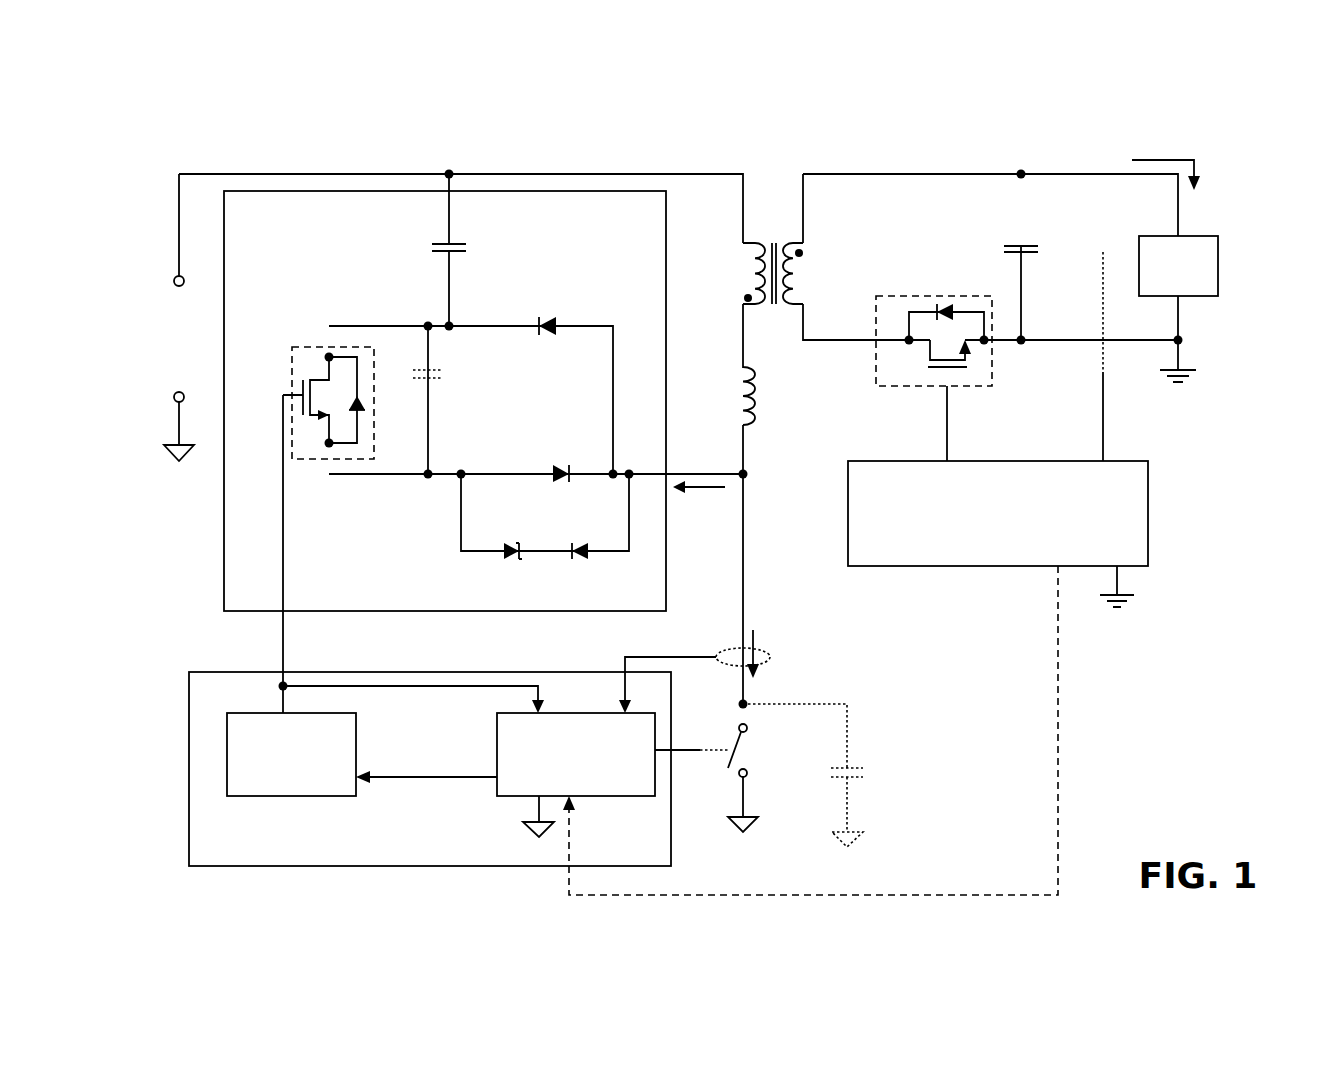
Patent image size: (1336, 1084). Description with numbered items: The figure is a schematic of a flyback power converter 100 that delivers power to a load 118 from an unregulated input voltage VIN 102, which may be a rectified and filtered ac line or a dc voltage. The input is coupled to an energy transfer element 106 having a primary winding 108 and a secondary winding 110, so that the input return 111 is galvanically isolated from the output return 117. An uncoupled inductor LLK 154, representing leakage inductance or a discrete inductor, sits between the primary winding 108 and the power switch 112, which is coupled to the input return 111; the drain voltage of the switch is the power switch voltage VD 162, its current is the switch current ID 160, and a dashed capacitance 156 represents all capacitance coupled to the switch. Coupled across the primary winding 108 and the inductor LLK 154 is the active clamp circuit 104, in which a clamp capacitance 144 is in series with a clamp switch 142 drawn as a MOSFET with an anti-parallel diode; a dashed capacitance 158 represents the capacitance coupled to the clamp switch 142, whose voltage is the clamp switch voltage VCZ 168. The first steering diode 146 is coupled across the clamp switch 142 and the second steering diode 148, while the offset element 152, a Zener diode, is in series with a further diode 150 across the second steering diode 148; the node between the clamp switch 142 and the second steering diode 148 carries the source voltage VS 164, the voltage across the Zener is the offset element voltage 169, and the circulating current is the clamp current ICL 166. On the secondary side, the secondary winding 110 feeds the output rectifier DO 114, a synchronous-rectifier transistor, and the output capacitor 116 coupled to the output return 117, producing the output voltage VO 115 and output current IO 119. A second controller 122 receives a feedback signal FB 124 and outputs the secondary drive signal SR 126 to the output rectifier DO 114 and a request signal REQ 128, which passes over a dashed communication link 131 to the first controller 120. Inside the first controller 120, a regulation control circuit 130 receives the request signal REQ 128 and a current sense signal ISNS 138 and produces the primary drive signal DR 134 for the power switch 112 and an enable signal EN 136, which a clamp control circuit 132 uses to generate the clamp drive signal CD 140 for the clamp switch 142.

The power converter 100 is at (1206, 108).
The input voltage VIN 102 is at (168, 325).
The active clamp circuit 104 is at (222, 583).
The energy transfer element 106 is at (773, 207).
The primary winding 108 is at (735, 238).
The secondary winding 110 is at (808, 270).
The input return 111 is at (177, 470).
The power switch S1 112 is at (770, 765).
The output rectifier DO 114 is at (948, 262).
The output voltage VO 115 is at (1065, 232).
The output capacitor C2 116 is at (1000, 230).
The output return 117 is at (1195, 380).
The load 118 is at (1220, 262).
The output current IO 119 is at (1145, 125).
The first controller 120 is at (228, 870).
The second controller 122 is at (1150, 525).
The feedback signal FB 124 is at (1098, 420).
The secondary drive signal SR 126 is at (955, 430).
The request signal REQ 128 is at (1025, 655).
The regulation control circuit 130 is at (612, 805).
The communication link 131 is at (1065, 812).
The clamp control circuit 132 is at (222, 762).
The primary drive signal DR 134 is at (690, 757).
The enable signal EN 136 is at (432, 785).
The current sense signal ISNS 138 is at (640, 647).
The clamp drive signal CD 140 is at (276, 640).
The clamp switch 142 is at (311, 465).
The clamp capacitance C1 144 is at (400, 250).
The steering diode D1 146 is at (570, 302).
The steering diode D2 148 is at (560, 440).
The diode D3 150 is at (600, 575).
The offset element Z1 152 is at (488, 580).
The uncoupled inductor LLK 154 is at (798, 404).
The capacitance CP1 156 is at (897, 750).
The capacitance CP2 158 is at (497, 372).
The switch current ID 160 is at (783, 622).
The power switch voltage VD 162 is at (770, 488).
The source voltage VS 164 is at (472, 440).
The clamp current ICL 166 is at (703, 527).
The clamp switch voltage VCZ 168 is at (407, 428).
The voltage VZ1 169 is at (527, 517).